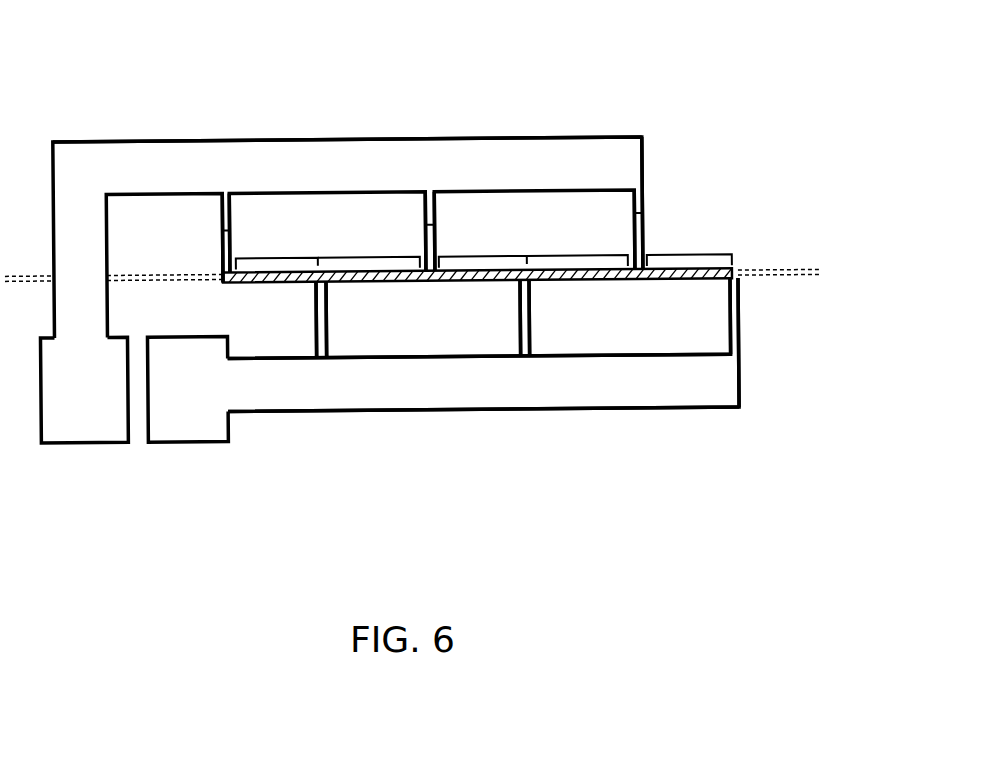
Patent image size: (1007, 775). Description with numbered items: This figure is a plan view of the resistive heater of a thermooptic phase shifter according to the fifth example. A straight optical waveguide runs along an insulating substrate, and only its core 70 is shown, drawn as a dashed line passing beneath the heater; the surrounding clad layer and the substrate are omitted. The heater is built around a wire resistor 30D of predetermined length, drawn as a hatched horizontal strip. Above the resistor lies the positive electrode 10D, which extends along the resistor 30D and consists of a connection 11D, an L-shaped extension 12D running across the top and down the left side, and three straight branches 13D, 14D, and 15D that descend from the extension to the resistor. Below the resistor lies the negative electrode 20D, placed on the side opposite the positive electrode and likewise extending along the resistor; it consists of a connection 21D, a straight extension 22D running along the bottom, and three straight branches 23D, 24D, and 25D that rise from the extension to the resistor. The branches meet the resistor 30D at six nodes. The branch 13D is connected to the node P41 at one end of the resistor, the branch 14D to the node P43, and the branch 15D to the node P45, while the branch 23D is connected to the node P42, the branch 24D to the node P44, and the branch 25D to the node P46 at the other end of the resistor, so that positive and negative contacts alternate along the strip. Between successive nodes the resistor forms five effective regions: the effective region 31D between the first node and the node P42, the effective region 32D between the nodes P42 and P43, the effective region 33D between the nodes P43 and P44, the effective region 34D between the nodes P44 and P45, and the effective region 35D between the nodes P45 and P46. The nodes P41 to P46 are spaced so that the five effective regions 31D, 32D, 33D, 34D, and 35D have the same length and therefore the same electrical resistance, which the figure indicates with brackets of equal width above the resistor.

The positive electrode 10D is at (582, 83).
The connection 11D is at (86, 441).
The L-shaped extension 12D is at (383, 152).
The branch 13D is at (226, 229).
The branch 14D is at (432, 225).
The branch 15D is at (645, 215).
The negative electrode 20D is at (529, 449).
The connection 21D is at (185, 441).
The straight extension 22D is at (374, 400).
The branch 23D is at (320, 327).
The branch 24D is at (530, 296).
The branch 25D is at (738, 329).
The wire resistor 30D is at (700, 280).
The effective region 31D is at (277, 249).
The effective region 32D is at (369, 248).
The effective region 33D is at (483, 247).
The effective region 34D is at (577, 247).
The effective region 35D is at (689, 246).
The core 70 is at (770, 270).
The node P41 is at (223, 283).
The node P42 is at (329, 285).
The node P43 is at (432, 287).
The node P44 is at (519, 283).
The node P45 is at (636, 281).
The node P46 is at (738, 279).